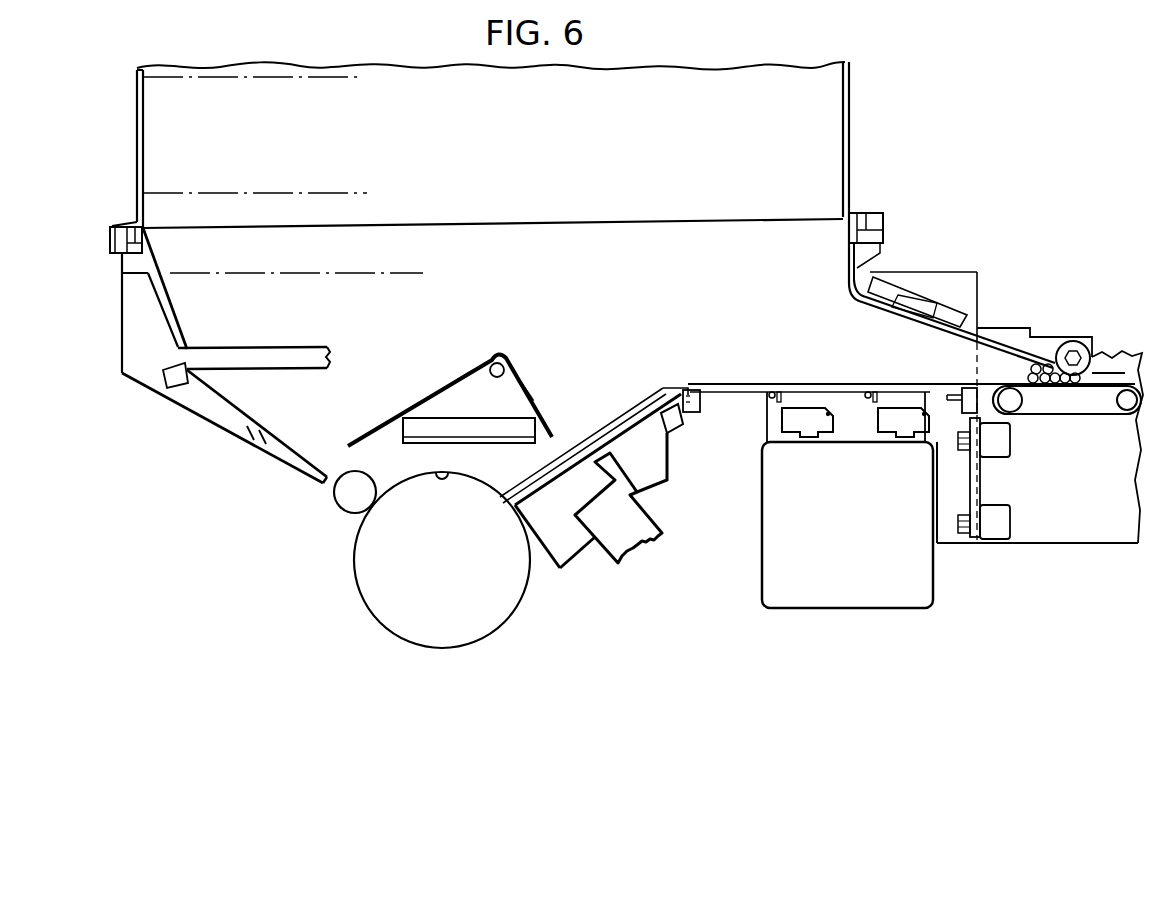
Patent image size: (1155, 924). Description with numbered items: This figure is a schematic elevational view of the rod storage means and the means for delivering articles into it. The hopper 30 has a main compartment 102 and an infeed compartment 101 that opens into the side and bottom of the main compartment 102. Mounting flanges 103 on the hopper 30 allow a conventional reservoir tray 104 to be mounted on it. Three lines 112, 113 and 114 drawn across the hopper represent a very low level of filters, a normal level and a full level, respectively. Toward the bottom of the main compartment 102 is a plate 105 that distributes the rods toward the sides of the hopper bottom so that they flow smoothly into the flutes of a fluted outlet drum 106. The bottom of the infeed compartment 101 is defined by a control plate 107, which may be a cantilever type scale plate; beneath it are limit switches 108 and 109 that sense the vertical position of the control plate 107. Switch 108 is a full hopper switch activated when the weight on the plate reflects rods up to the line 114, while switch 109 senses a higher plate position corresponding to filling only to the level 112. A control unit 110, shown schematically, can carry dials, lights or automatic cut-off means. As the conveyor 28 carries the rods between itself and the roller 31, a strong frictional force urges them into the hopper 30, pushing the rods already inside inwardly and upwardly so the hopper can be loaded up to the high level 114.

The conveyor 28 is at (1077, 415).
The hopper 30 is at (878, 162).
The roller 31 is at (1071, 342).
The infeed compartment 101 is at (852, 355).
The main compartment 102 is at (506, 307).
The mounting flanges 103 is at (110, 237).
The reservoir tray 104 is at (137, 147).
The plate 105 is at (510, 373).
The fluted outlet drum 106 is at (352, 553).
The control plate 107 is at (840, 385).
The limit switch 108 is at (763, 393).
The limit switch 109 is at (866, 393).
The control unit 110 is at (767, 500).
The line 112 is at (352, 268).
The line 113 is at (308, 191).
The line 114 is at (286, 78).